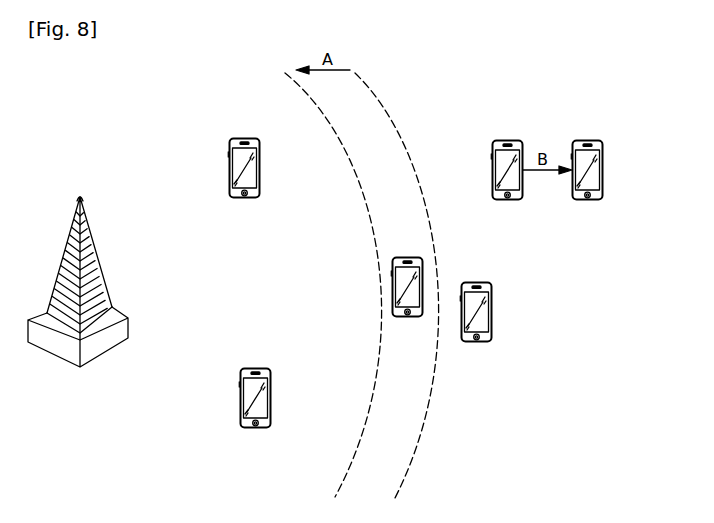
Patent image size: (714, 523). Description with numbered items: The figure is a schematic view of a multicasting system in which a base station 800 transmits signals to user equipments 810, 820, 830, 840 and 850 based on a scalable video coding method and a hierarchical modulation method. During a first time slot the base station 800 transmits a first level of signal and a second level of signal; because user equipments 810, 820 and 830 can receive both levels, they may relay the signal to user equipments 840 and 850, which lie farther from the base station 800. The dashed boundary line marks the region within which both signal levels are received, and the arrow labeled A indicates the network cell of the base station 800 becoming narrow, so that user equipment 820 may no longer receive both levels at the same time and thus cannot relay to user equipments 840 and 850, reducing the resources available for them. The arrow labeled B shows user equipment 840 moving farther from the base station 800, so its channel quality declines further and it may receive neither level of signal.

The base station 800 is at (76, 196).
The user equipment 810 is at (247, 137).
The user equipment 820 is at (406, 255).
The user equipment 830 is at (258, 367).
The user equipment 840 is at (508, 138).
The user equipment 850 is at (477, 280).